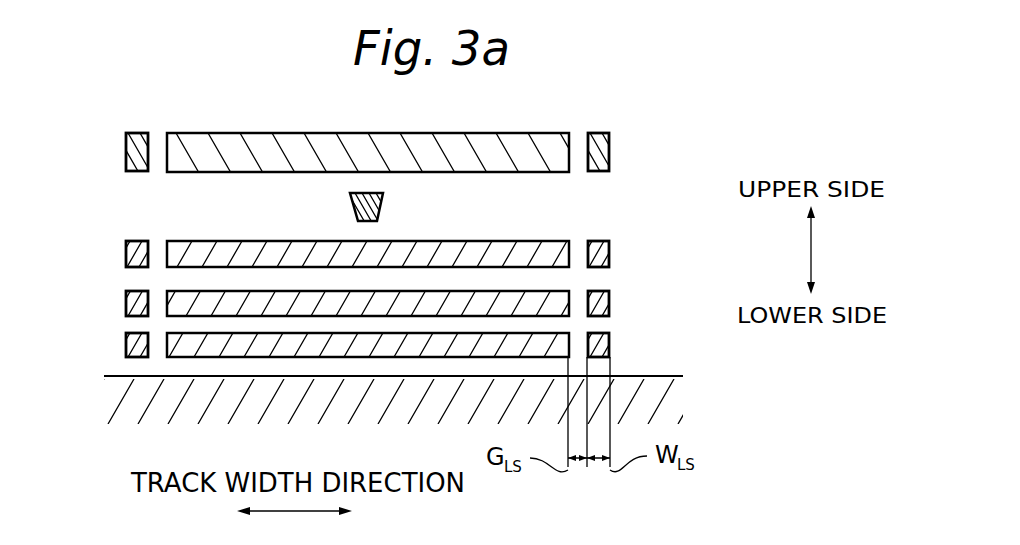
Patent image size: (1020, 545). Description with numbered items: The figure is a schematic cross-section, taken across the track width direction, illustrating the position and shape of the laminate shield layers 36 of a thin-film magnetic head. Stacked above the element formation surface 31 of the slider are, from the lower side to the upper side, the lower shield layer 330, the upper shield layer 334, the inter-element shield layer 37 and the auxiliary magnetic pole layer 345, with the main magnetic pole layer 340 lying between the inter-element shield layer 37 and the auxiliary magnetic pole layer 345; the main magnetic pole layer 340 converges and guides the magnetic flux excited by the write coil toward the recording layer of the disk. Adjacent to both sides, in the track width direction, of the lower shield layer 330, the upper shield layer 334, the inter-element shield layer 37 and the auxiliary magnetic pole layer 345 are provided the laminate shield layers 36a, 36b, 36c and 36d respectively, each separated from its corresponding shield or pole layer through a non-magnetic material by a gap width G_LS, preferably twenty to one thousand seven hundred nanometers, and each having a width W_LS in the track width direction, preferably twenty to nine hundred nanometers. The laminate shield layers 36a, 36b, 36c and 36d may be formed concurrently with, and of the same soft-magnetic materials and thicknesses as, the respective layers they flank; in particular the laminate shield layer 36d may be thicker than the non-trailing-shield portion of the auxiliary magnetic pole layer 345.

The element formation surface 31 is at (663, 375).
The lower shield layer 330 is at (182, 337).
The upper shield layer 334 is at (185, 305).
The inter-element shield layer 37 is at (183, 250).
The auxiliary magnetic pole layer 345 is at (191, 158).
The main magnetic pole layer 340 is at (381, 205).
The laminate shield layers 36 is at (391, 249).
The laminate shield layer 36a is at (126, 347).
The laminate shield layer 36b is at (126, 303).
The laminate shield layer 36c is at (126, 254).
The laminate shield layer 36d is at (126, 150).